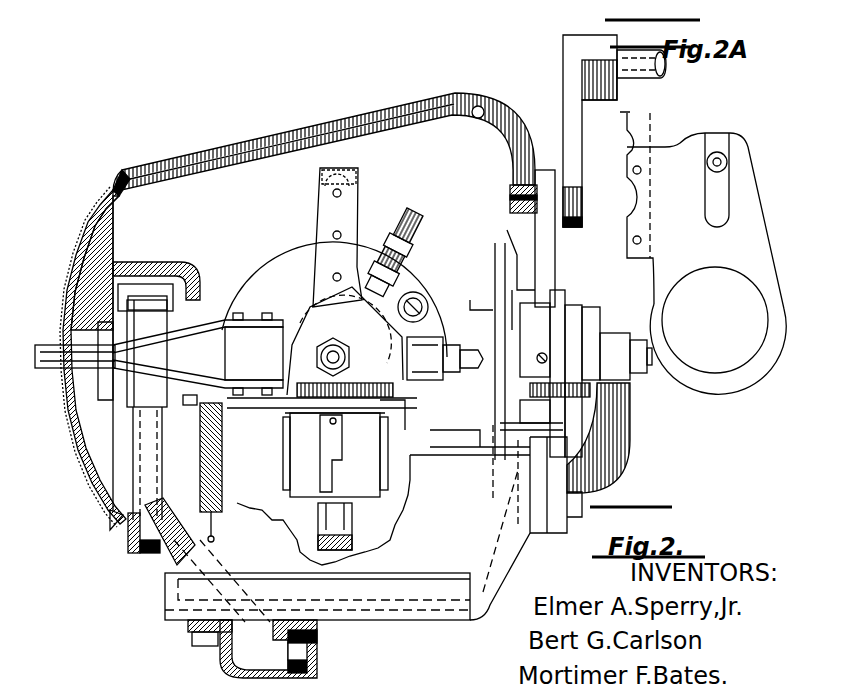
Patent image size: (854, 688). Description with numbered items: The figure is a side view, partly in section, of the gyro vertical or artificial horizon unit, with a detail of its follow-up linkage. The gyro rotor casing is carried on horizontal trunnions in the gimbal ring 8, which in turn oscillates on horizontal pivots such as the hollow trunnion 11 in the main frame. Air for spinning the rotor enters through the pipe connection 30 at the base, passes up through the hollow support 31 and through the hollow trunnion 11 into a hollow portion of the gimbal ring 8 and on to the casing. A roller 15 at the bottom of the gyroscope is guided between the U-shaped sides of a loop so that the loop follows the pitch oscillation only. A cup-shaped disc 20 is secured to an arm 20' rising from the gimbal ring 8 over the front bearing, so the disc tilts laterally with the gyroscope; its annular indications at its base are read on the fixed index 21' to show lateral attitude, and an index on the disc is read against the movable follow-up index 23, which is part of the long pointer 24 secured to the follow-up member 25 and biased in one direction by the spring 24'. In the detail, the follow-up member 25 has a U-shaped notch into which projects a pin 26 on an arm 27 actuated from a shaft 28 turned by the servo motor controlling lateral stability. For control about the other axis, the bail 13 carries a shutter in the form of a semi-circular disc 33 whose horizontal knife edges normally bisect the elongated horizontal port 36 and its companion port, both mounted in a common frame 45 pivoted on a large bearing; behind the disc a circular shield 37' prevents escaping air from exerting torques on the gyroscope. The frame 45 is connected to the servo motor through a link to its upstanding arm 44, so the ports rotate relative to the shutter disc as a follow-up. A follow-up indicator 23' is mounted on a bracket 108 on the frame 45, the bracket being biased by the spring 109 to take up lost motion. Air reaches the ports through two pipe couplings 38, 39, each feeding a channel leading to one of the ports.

In FIG. 2, the pointer 24 is at (325, 153).
In FIG. 2A, the pointer 24 is at (672, 173).
In FIG. 2, the spring 24' is at (468, 132).
In FIG. 2, the follow-up index 23 is at (103, 180).
In FIG. 2, the cup-shaped disc 20 is at (79, 357).
In FIG. 2, the arm 20' is at (156, 263).
In FIG. 2, the follow-up indicator 23' is at (64, 337).
In FIG. 2, the gimbal ring 8 is at (208, 320).
In FIG. 2, the frame 45 is at (254, 353).
In FIG. 2, the pivot 11 is at (147, 375).
In FIG. 2, the spring 109 is at (222, 444).
In FIG. 2, the bracket 108 is at (192, 405).
In FIG. 2, the fixed index 21' is at (92, 522).
In FIG. 2, the hollow support 31 is at (133, 532).
In FIG. 2, the pipe connection 30 is at (307, 651).
In FIG. 2, the upstanding arm 44 is at (322, 224).
In FIG. 2, the bail 13 is at (356, 178).
In FIG. 2, the semi-circular disc 33 is at (563, 255).
In FIG. 2, the roller 15 is at (355, 527).
In FIG. 2, the pipe coupling 38 is at (420, 219).
In FIG. 2, the pipe coupling 39 is at (453, 337).
In FIG. 2, the circular shield 37' is at (462, 331).
In FIG. 2, the follow-up member 25 is at (545, 180).
In FIG. 2A, the follow-up member 25 is at (703, 253).
In FIG. 2, the arm 27 is at (583, 152).
In FIG. 2, the shaft 28 is at (648, 113).
In FIG. 2, the pin 26 is at (583, 202).
In FIG. 2A, the pin 26 is at (722, 152).
In FIG. 2, the port 36 is at (512, 458).